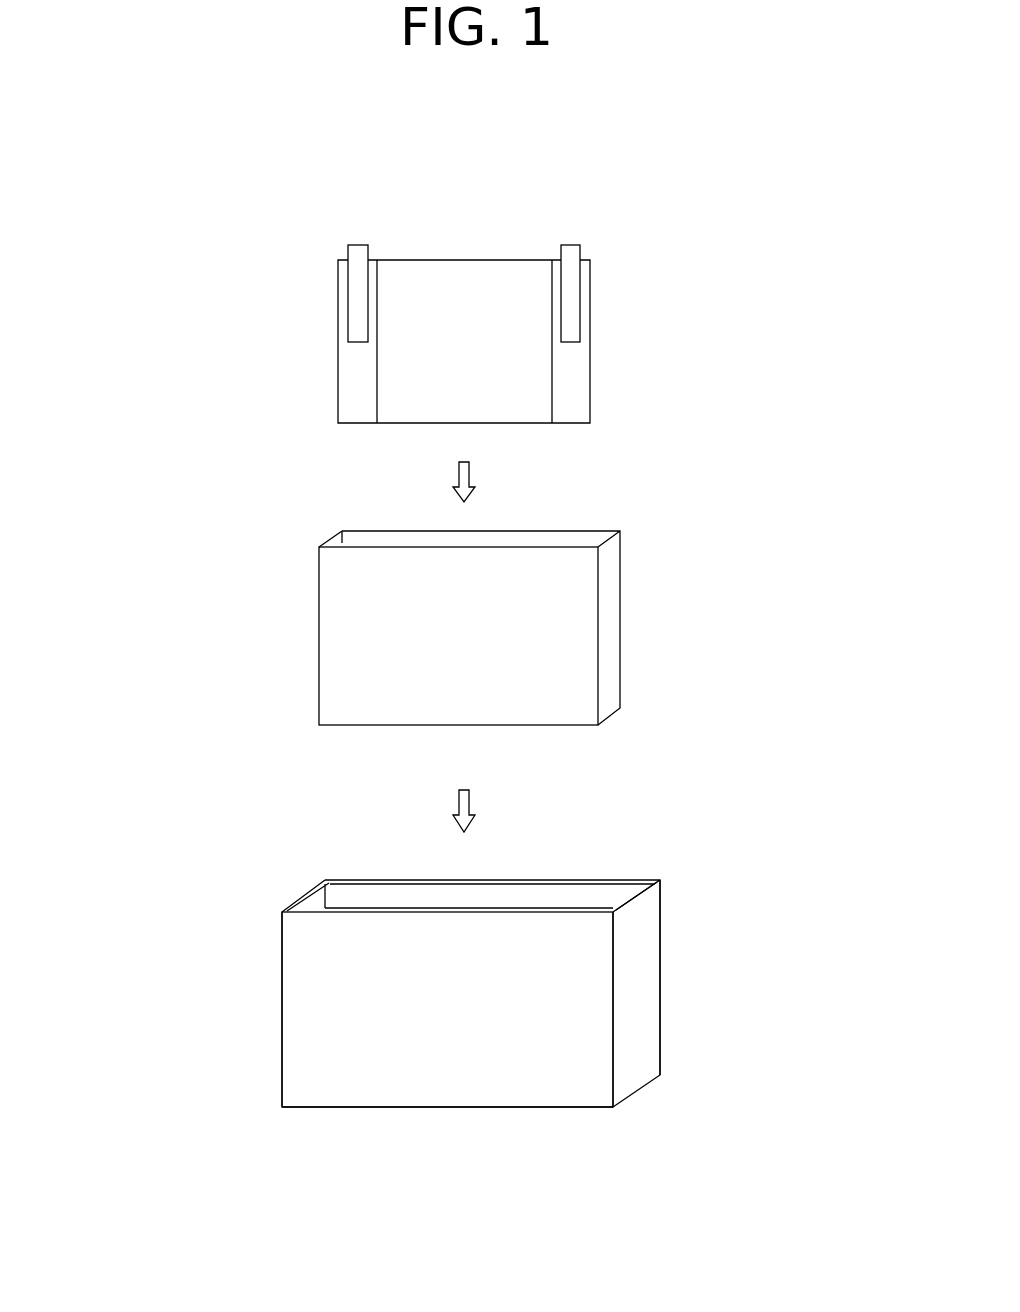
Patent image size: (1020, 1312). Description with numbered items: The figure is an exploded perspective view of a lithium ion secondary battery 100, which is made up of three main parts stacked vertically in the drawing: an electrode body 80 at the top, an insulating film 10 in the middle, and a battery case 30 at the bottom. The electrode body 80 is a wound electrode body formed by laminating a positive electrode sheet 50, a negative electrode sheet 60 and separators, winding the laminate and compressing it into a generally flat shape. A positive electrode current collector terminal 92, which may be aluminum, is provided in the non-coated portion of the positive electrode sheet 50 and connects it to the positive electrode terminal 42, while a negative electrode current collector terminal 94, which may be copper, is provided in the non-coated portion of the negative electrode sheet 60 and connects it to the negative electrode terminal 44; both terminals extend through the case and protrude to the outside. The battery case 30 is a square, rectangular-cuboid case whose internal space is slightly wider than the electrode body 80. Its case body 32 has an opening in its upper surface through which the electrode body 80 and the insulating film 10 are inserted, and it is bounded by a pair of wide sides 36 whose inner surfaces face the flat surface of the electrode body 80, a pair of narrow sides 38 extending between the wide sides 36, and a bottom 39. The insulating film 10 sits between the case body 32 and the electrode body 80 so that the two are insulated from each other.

The lithium ion secondary battery 100 is at (178, 487).
The electrode body 80 is at (626, 232).
The positive electrode terminal 42 is at (358, 258).
The negative electrode terminal 44 is at (570, 258).
The positive electrode current collector terminal 92 is at (360, 322).
The negative electrode current collector terminal 94 is at (573, 320).
The positive electrode sheet 50 is at (338, 395).
The negative electrode sheet 60 is at (592, 395).
The insulating film 10 is at (626, 597).
The battery case 30 is at (690, 880).
The case body 32 is at (663, 962).
The wide sides 36 is at (473, 1073).
The narrow sides 38 is at (640, 1030).
The bottom 39 is at (550, 1108).